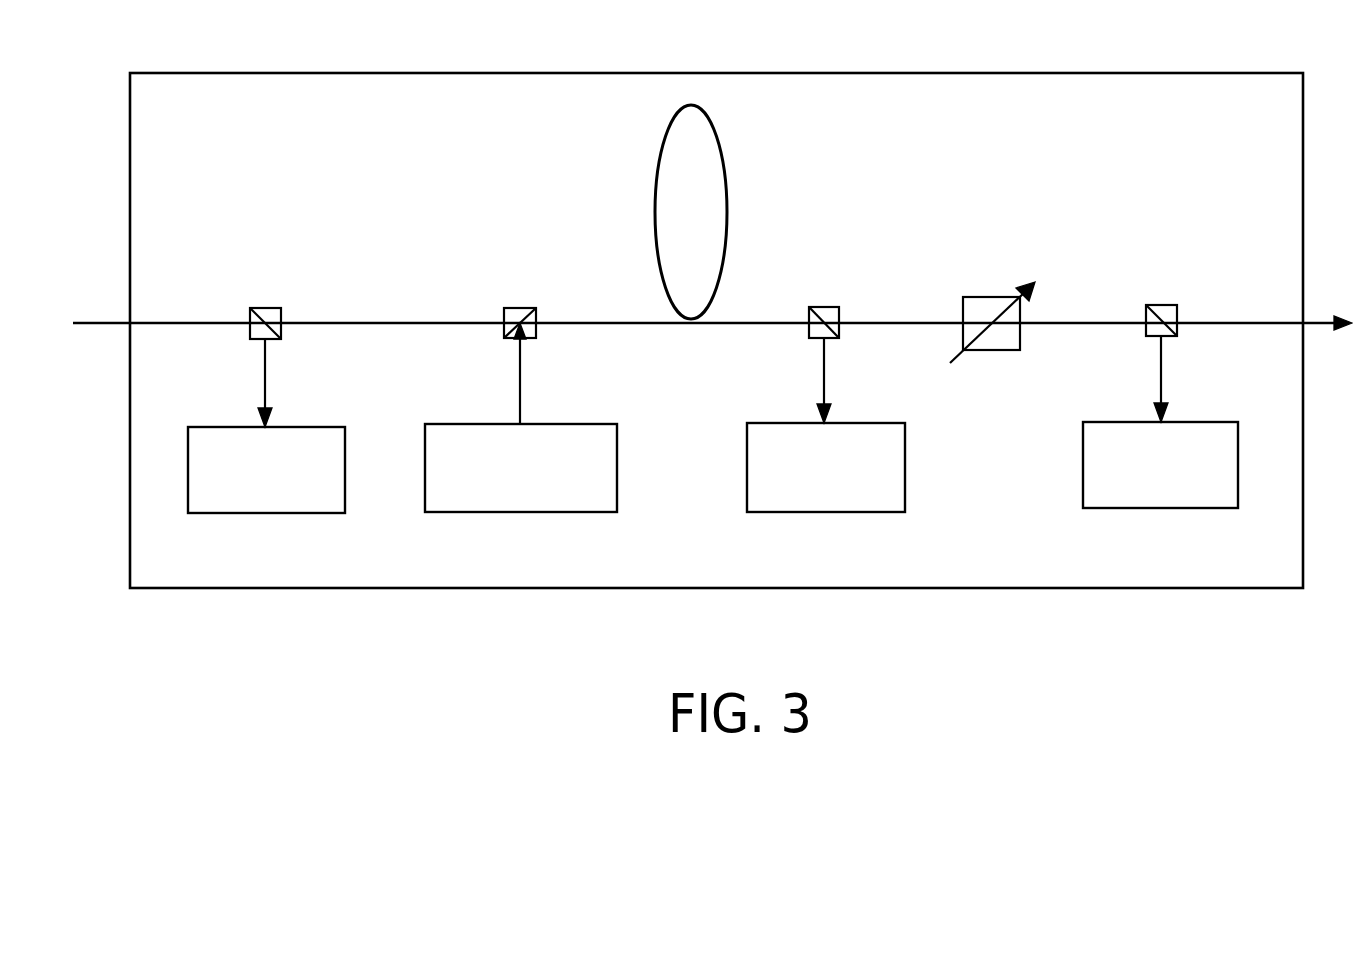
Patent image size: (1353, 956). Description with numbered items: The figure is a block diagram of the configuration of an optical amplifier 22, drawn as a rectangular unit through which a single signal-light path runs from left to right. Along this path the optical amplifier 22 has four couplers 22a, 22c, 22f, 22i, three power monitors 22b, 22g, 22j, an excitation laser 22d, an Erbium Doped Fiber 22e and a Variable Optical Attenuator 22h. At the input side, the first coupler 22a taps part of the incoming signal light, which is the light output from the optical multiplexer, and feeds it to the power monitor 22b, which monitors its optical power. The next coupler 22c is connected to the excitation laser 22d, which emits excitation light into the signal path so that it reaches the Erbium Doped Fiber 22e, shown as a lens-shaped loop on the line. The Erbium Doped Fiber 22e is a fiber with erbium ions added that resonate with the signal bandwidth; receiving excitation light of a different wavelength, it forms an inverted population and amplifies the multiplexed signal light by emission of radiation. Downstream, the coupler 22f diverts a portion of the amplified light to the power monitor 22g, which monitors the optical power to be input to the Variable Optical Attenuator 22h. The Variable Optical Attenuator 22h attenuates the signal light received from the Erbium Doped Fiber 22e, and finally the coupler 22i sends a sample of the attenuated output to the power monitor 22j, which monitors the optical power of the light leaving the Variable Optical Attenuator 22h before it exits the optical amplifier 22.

The optical amplifier 22 is at (347, 73).
The coupler 22a is at (262, 309).
The power monitor 22b is at (218, 513).
The coupler 22c is at (520, 308).
The excitation laser 22d is at (458, 512).
The Erbium Doped Fiber (EDF) 22e is at (727, 190).
The coupler 22f is at (823, 307).
The power monitor 22g is at (770, 512).
The Variable Optical Attenuator (VOA) 22h is at (988, 296).
The coupler 22i is at (1160, 305).
The power monitor 22j is at (1103, 508).